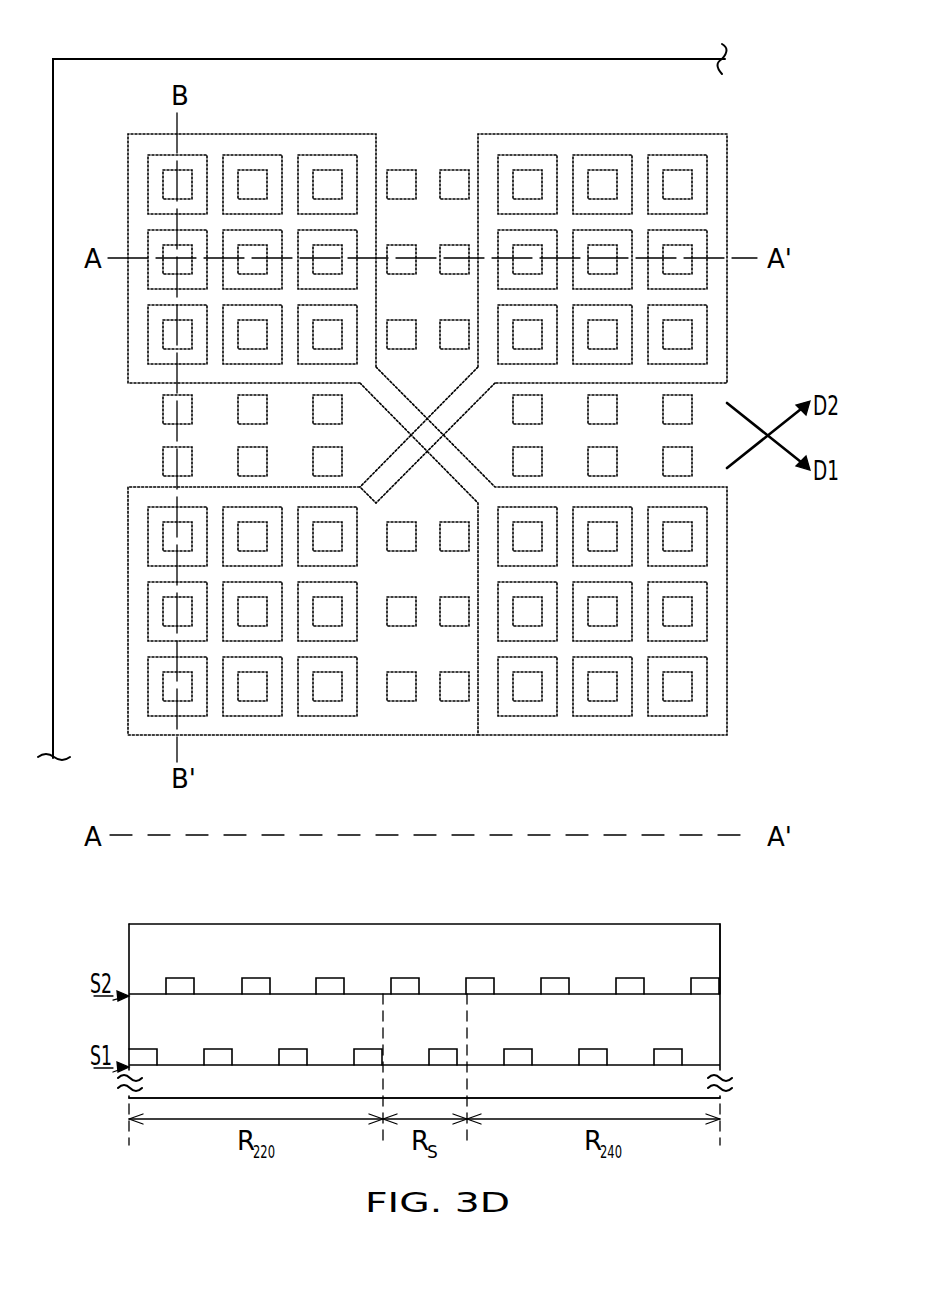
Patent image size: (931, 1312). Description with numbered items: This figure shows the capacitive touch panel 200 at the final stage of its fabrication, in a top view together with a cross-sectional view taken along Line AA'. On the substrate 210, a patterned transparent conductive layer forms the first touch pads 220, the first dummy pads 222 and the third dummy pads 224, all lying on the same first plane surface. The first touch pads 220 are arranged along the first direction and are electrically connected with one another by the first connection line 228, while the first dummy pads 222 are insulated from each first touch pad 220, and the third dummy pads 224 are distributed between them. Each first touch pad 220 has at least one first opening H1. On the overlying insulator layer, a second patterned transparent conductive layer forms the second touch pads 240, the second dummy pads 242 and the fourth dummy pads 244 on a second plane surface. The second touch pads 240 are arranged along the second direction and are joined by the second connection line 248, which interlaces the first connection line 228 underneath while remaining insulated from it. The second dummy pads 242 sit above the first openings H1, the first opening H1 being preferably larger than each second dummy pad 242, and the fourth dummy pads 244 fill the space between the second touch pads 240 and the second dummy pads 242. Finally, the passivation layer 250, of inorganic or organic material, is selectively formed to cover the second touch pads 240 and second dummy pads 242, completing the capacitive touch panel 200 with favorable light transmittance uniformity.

The capacitive touch panel 200 is at (790, 1195).
The substrate 210 is at (162, 93).
The first touch pads 220 is at (246, 140).
The first dummy pads 222 is at (527, 180).
The third dummy pads 224 is at (453, 172).
The first connection line 228 is at (383, 404).
The second touch pads 240 is at (478, 978).
The second dummy pads 242 is at (178, 978).
The fourth dummy pads 244 is at (403, 978).
The second connection line 248 is at (410, 465).
The passivation layer 250 is at (712, 946).
The first opening H1 is at (304, 170).